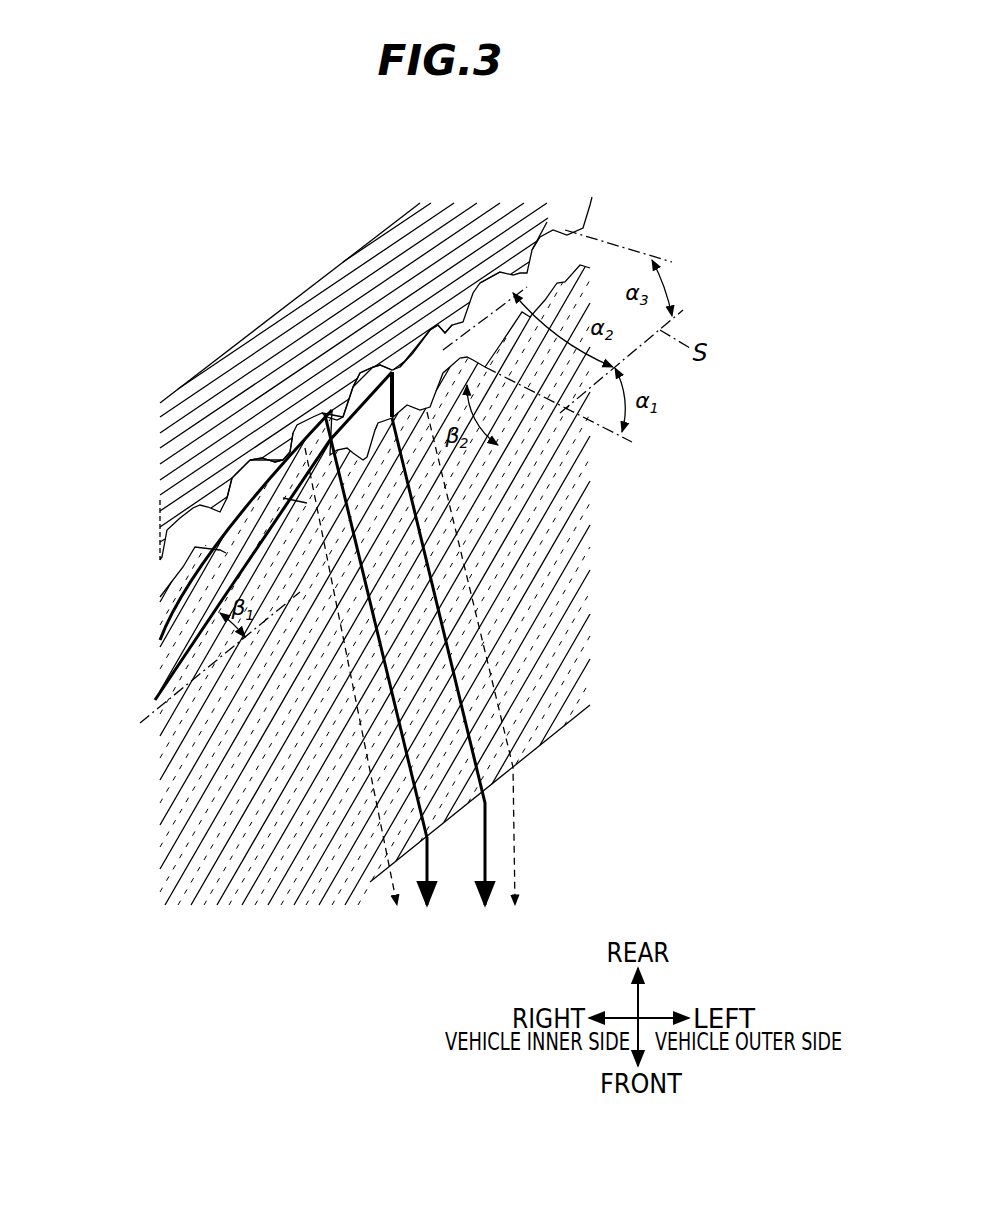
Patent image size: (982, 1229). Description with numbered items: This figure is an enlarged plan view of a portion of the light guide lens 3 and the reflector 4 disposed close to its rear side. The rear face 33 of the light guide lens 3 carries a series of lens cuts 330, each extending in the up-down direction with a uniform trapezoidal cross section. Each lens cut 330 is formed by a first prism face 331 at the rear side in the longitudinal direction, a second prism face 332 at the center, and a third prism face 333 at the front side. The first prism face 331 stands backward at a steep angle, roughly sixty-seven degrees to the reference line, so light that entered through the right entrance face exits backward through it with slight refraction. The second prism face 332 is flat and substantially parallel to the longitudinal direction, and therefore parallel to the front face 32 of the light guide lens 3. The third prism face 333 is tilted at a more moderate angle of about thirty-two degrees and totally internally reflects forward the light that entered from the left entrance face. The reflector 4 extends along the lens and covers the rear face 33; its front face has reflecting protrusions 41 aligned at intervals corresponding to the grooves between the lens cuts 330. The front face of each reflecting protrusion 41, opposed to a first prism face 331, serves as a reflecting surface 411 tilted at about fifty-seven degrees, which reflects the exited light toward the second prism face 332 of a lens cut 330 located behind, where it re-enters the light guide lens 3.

The light guide lens 3 is at (177, 800).
The front face 32 is at (557, 750).
The rear face 33 is at (206, 543).
The lens cut 330 is at (345, 402).
The first prism face 331 is at (500, 448).
The second prism face 332 is at (413, 353).
The third prism face 333 is at (373, 418).
The reflector 4 is at (178, 402).
The reflecting protrusion 41 is at (330, 400).
The reflecting surface 411 is at (567, 235).